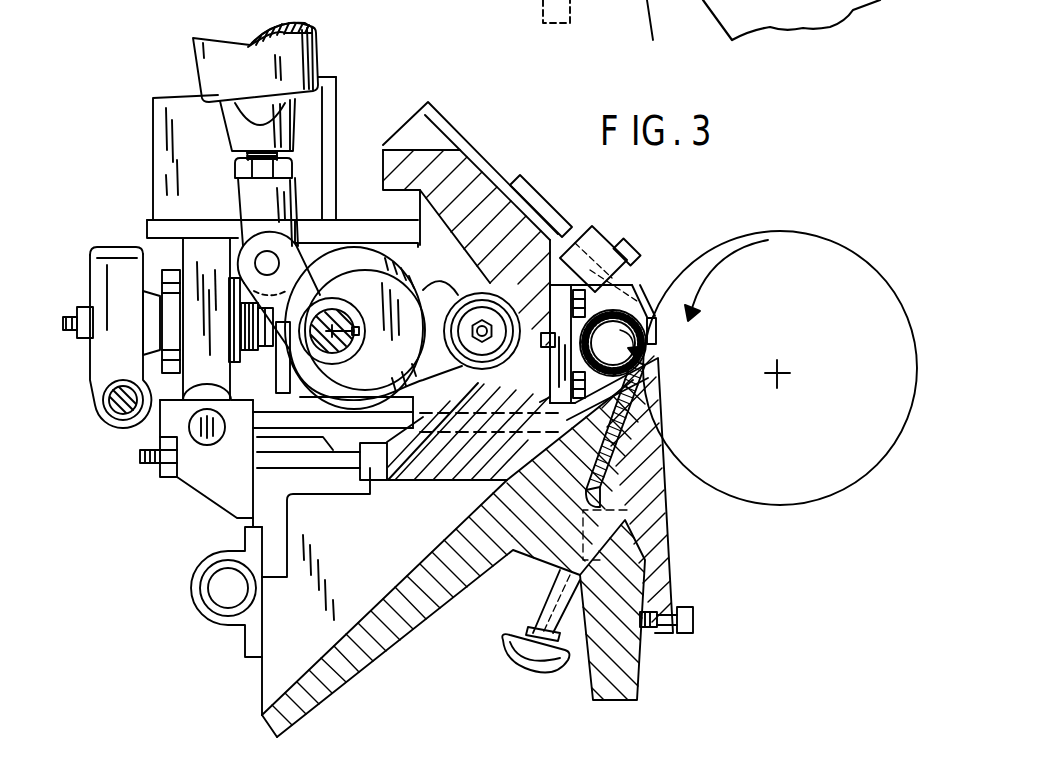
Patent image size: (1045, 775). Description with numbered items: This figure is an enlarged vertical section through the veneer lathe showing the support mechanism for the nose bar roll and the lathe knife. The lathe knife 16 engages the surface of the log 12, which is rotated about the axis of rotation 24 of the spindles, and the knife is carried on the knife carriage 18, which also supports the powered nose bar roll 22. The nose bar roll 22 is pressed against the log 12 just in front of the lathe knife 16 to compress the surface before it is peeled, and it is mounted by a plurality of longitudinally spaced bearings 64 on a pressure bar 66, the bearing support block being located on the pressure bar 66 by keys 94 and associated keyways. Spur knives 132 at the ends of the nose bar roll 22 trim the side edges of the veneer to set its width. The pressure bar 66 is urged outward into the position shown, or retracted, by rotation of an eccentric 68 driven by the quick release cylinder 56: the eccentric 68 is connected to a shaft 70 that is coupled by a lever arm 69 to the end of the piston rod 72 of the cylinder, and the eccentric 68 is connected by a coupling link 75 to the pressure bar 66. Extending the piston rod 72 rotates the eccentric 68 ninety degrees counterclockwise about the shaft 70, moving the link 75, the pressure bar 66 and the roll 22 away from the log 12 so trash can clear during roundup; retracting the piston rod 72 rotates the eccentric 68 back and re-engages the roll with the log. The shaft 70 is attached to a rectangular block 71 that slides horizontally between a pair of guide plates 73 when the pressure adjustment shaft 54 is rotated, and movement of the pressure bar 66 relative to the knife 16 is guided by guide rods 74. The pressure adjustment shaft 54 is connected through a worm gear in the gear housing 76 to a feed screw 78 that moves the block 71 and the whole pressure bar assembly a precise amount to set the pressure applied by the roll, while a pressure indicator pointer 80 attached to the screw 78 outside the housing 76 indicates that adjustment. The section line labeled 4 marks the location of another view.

The section line for FIG. 4 is at (612, 32).
The log 12 is at (832, 238).
The lathe knife 16 is at (648, 378).
The knife carriage 18 is at (413, 668).
The nose bar roll 22 is at (620, 310).
The axis of rotation 24 is at (780, 372).
The pressure adjustment shaft 54 is at (113, 403).
The quick release cylinder 56 is at (193, 58).
The bearings 64 is at (595, 293).
The pressure bar 66 is at (472, 197).
The eccentric 68 is at (370, 287).
The lever arm 69 is at (307, 307).
The shaft 70 is at (345, 340).
The rectangular block 71 is at (300, 400).
The piston rod 72 is at (240, 153).
The guide plates 73 is at (388, 227).
The guide rods 74 is at (330, 455).
The coupling link 75 is at (423, 287).
The gear housing 76 is at (113, 250).
The feed screw 78 is at (262, 333).
The pressure indicator pointer 80 is at (83, 277).
The keys 94 is at (563, 315).
The spur knives 132 is at (657, 330).